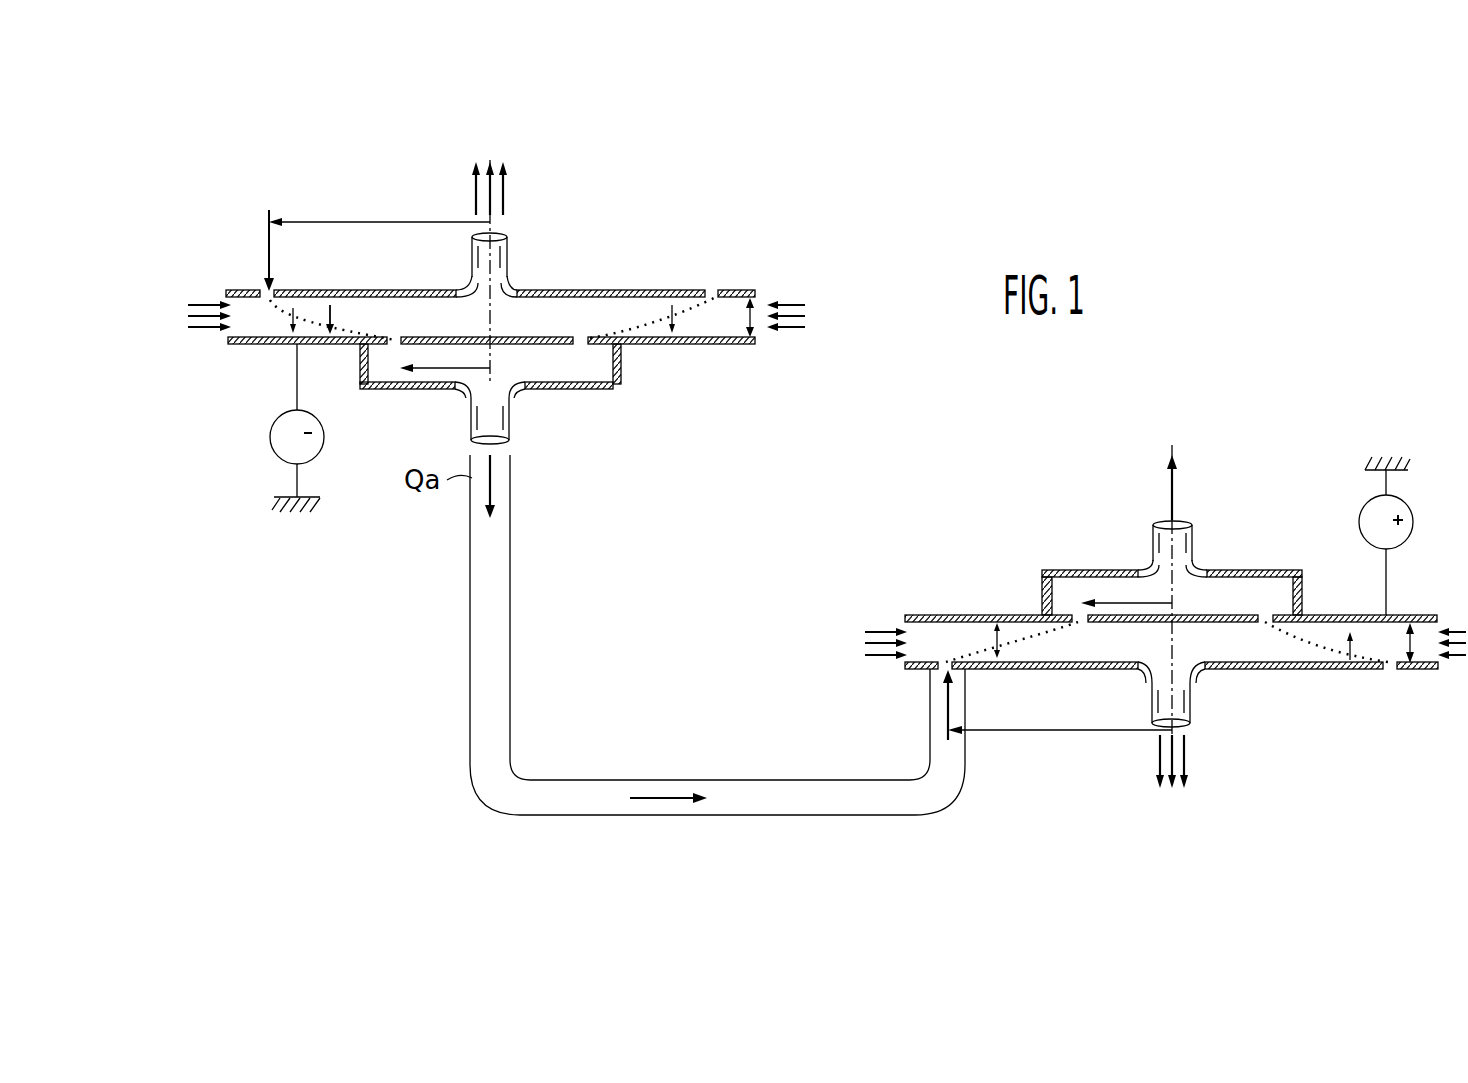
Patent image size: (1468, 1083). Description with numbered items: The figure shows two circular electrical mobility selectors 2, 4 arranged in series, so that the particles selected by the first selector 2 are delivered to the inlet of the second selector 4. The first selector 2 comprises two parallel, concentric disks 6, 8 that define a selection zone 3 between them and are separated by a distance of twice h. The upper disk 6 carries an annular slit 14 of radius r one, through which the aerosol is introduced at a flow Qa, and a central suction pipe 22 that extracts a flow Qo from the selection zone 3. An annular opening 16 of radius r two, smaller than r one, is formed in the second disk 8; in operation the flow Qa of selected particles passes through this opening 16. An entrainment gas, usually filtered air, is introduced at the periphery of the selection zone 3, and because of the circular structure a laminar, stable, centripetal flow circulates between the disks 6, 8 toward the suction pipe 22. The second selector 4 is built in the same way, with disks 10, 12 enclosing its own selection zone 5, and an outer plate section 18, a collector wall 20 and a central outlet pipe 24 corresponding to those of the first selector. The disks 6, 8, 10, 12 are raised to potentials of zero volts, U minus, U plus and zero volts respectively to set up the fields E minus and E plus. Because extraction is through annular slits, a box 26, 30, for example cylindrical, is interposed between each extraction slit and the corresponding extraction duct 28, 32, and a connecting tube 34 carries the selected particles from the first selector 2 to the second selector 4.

The first circular electrical mobility selector 2 is at (641, 274).
The selection zone 3 is at (528, 329).
The second circular electrical mobility selector 4 is at (962, 595).
The selection zone of the second selector 5 is at (1153, 656).
The upper disk 6 is at (420, 290).
The second disk 8 is at (283, 345).
The selector disk 10 is at (930, 614).
The selector disk 12 is at (1310, 669).
The annular slit 14 is at (712, 290).
The annular opening 16 is at (606, 350).
The outer plate section of second device 18 is at (1390, 669).
The collector wall of second device 20 is at (1278, 613).
The central suction pipe 22 is at (508, 253).
The central outlet pipe of second device 24 is at (1190, 703).
The box 26 is at (402, 386).
The extraction duct 28 is at (509, 418).
The box 30 is at (1090, 570).
The extraction duct 32 is at (1192, 546).
The connecting tube 34 is at (470, 642).